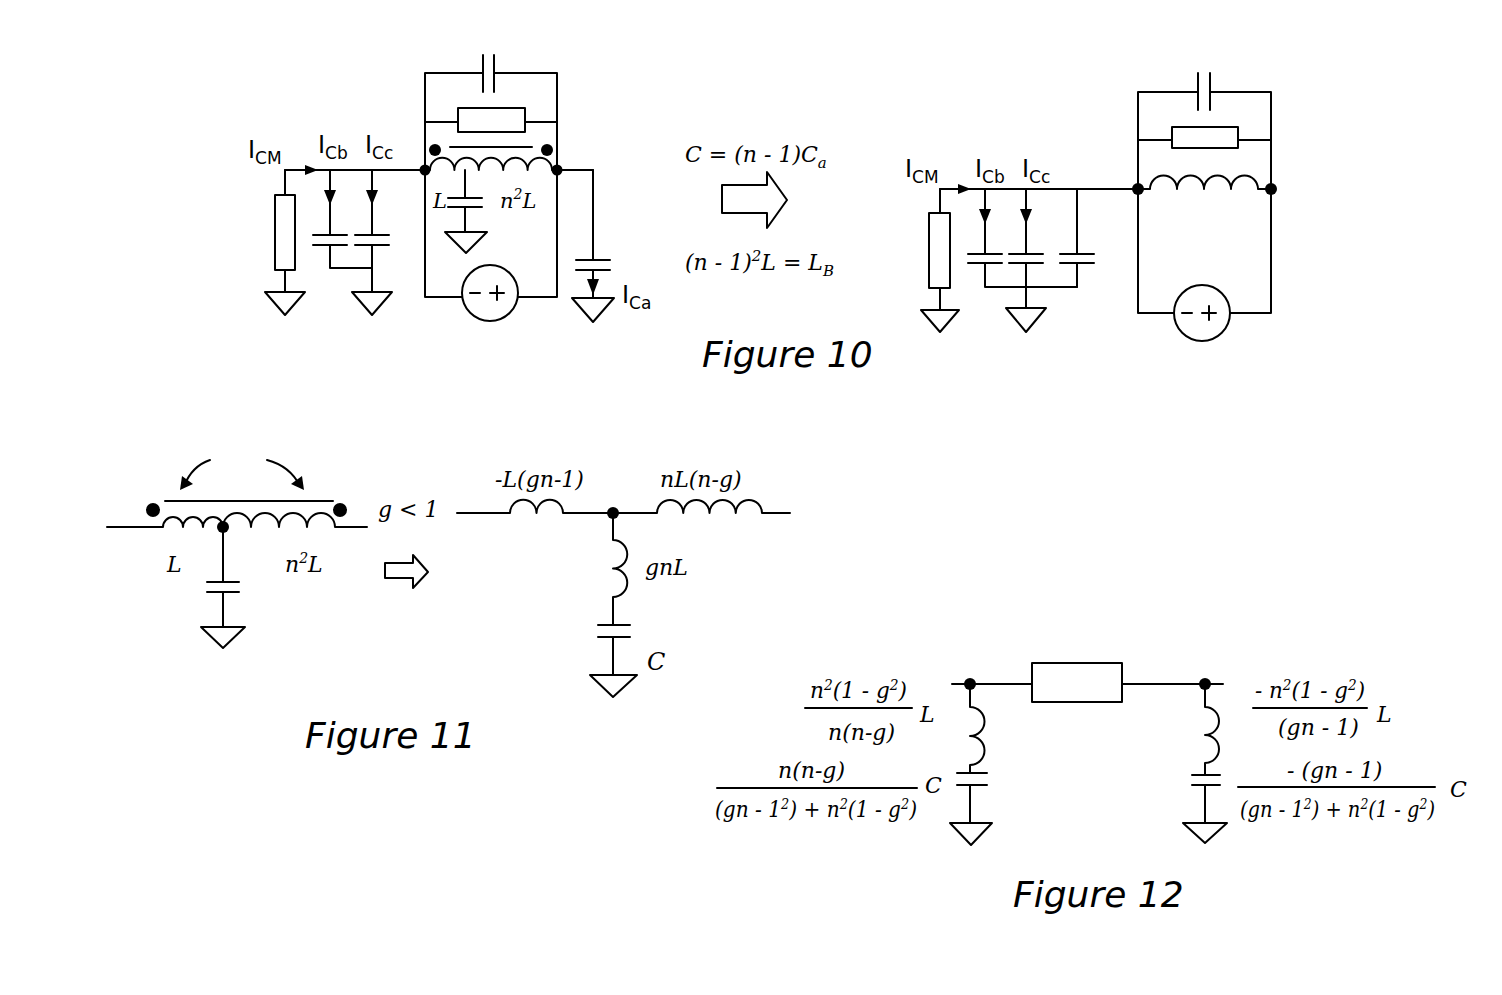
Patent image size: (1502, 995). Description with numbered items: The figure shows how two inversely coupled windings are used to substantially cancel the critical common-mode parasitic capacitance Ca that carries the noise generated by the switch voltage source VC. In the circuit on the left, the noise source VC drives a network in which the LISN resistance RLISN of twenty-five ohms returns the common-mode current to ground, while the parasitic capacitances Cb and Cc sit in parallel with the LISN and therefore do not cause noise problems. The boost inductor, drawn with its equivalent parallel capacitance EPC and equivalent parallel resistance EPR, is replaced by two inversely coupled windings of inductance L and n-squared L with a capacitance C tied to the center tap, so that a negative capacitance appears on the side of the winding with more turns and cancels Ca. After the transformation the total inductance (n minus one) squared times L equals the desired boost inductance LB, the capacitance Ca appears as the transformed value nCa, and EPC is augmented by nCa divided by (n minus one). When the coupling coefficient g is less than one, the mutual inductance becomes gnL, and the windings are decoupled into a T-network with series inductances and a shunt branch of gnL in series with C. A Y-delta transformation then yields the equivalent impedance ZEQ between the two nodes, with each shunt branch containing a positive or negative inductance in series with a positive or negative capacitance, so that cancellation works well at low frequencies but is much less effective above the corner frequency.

In FIG. 10, the LISN resistance RLISN is at (578, 251).
In FIG. 10, the parasitic capacitance Cb is at (695, 250).
In FIG. 10, the parasitic capacitance Cc is at (705, 251).
In FIG. 10, the parasitic capacitance Ca is at (604, 246).
In FIG. 10, the transformed capacitance nCa is at (1084, 254).
In FIG. 10, the equivalent parallel capacitance EPC is at (1357, 70).
In FIG. 10, the equivalent parallel resistance EPR is at (876, 127).
In FIG. 10, the boost inductance LB is at (866, 168).
In FIG. 10, the center-tap capacitance C is at (484, 212).
In FIG. 11, the center-tap capacitance C is at (236, 587).
In FIG. 10, the common-mode noise voltage source VC is at (846, 321).
In FIG. 11, the mutual inductance gnL is at (237, 496).
In FIG. 12, the equivalent impedance ZEQ is at (1087, 659).